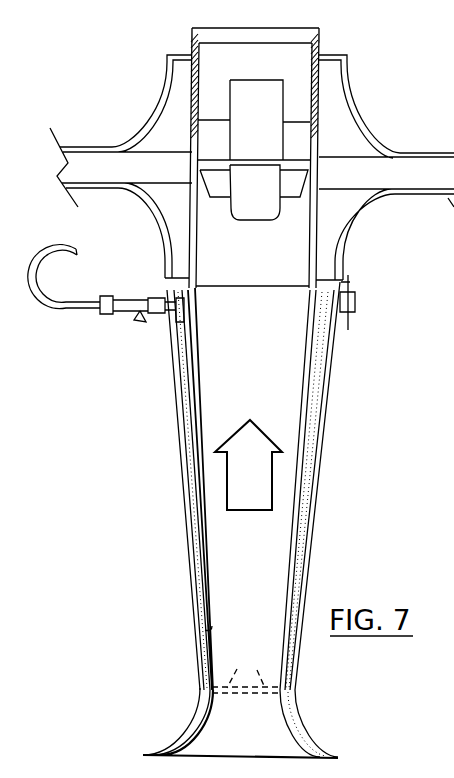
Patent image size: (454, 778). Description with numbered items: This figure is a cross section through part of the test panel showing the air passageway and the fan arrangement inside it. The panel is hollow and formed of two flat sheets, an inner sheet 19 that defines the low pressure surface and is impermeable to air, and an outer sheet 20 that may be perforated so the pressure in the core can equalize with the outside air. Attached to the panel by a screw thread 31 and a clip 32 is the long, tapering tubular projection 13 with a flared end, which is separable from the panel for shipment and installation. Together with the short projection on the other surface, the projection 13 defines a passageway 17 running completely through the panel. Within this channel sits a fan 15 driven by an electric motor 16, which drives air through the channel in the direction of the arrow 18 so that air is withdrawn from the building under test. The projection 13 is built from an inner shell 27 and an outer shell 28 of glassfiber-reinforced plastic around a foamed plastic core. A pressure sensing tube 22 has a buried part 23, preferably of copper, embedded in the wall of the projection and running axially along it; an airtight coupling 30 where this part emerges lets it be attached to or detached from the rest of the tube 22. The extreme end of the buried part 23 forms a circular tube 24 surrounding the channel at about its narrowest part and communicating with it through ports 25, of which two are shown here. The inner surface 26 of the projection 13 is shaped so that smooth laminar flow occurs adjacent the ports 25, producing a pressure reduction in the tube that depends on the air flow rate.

The tapering tubular projection 13 is at (325, 413).
The fan 15 is at (268, 201).
The electric motor 16 is at (270, 128).
The passageway 17 is at (228, 410).
The arrow 18 is at (257, 487).
The inner sheet 19 is at (92, 186).
The outer sheet 20 is at (100, 148).
The pressure sensing tube 22 is at (57, 306).
The buried part of pressure sensing tube 23 is at (193, 536).
The circular tube 24 is at (247, 697).
The ports 25 is at (247, 669).
The inner surface of projection 26 is at (205, 632).
The inner shell 27 is at (210, 578).
The outer shell 28 is at (193, 593).
The airtight coupling 30 is at (132, 300).
The screw thread 31 is at (303, 284).
The clip 32 is at (356, 297).